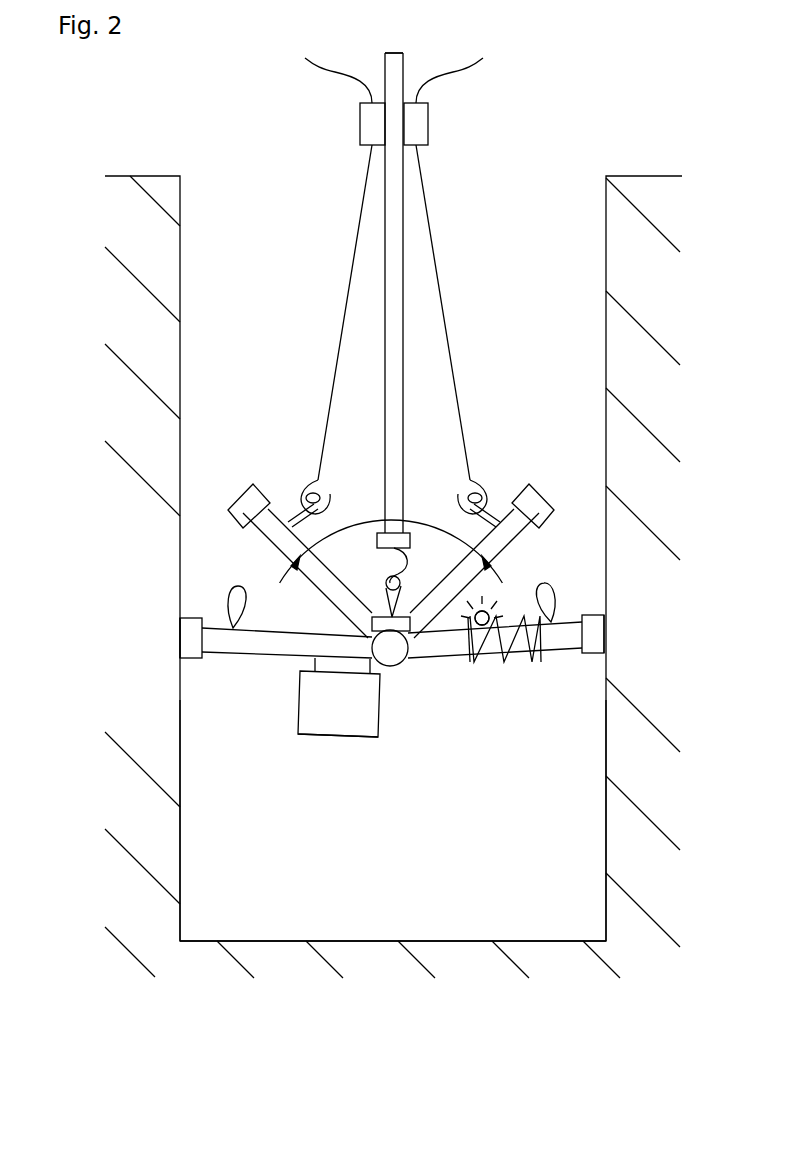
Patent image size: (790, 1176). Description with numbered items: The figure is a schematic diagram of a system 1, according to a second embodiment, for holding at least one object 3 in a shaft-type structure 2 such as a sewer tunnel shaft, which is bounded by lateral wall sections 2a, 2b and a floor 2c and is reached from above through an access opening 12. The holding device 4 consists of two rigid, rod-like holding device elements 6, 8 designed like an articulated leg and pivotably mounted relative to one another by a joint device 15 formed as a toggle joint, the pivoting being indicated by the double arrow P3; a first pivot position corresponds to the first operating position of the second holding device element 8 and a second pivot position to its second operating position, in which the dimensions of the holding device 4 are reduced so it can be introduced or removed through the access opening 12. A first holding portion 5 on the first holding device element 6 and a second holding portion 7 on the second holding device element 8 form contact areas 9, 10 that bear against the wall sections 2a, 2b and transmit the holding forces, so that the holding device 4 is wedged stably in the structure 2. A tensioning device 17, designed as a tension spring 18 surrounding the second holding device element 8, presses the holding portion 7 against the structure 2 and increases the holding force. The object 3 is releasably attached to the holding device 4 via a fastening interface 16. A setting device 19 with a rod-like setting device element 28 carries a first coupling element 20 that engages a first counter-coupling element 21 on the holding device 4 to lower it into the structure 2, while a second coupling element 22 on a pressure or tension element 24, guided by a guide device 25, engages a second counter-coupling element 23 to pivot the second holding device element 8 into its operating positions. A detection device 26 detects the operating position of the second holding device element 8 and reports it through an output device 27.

The system 1 is at (497, 325).
The shaft-type structure 2 is at (620, 175).
The wall section 2a is at (178, 814).
The wall section 2b is at (613, 845).
The floor 2c is at (449, 942).
The object 3 is at (334, 738).
The holding device 4 is at (410, 752).
The first holding portion 5 is at (186, 660).
The first holding device element 6 is at (264, 660).
The second holding portion 7 is at (594, 654).
The second holding device element 8 is at (426, 660).
The contact area 9 is at (178, 640).
The contact area 10 is at (608, 633).
The access opening 12 is at (508, 150).
The joint device 15 is at (396, 668).
The fastening interface 16 is at (336, 683).
The tensioning device 17 is at (530, 665).
The tension spring 18 is at (541, 656).
The setting device 19 is at (333, 262).
The first coupling element 20 is at (389, 573).
The first counter-coupling element 21 is at (383, 598).
The second coupling element 22 is at (303, 478).
The second counter-coupling element 23 is at (226, 597).
The pressure or tension element 24 is at (426, 205).
The guide device 25 is at (428, 113).
The detection device 26 is at (482, 651).
The output device 27 is at (482, 618).
The setting device element 28 is at (381, 352).
The double arrow P3 is at (373, 521).